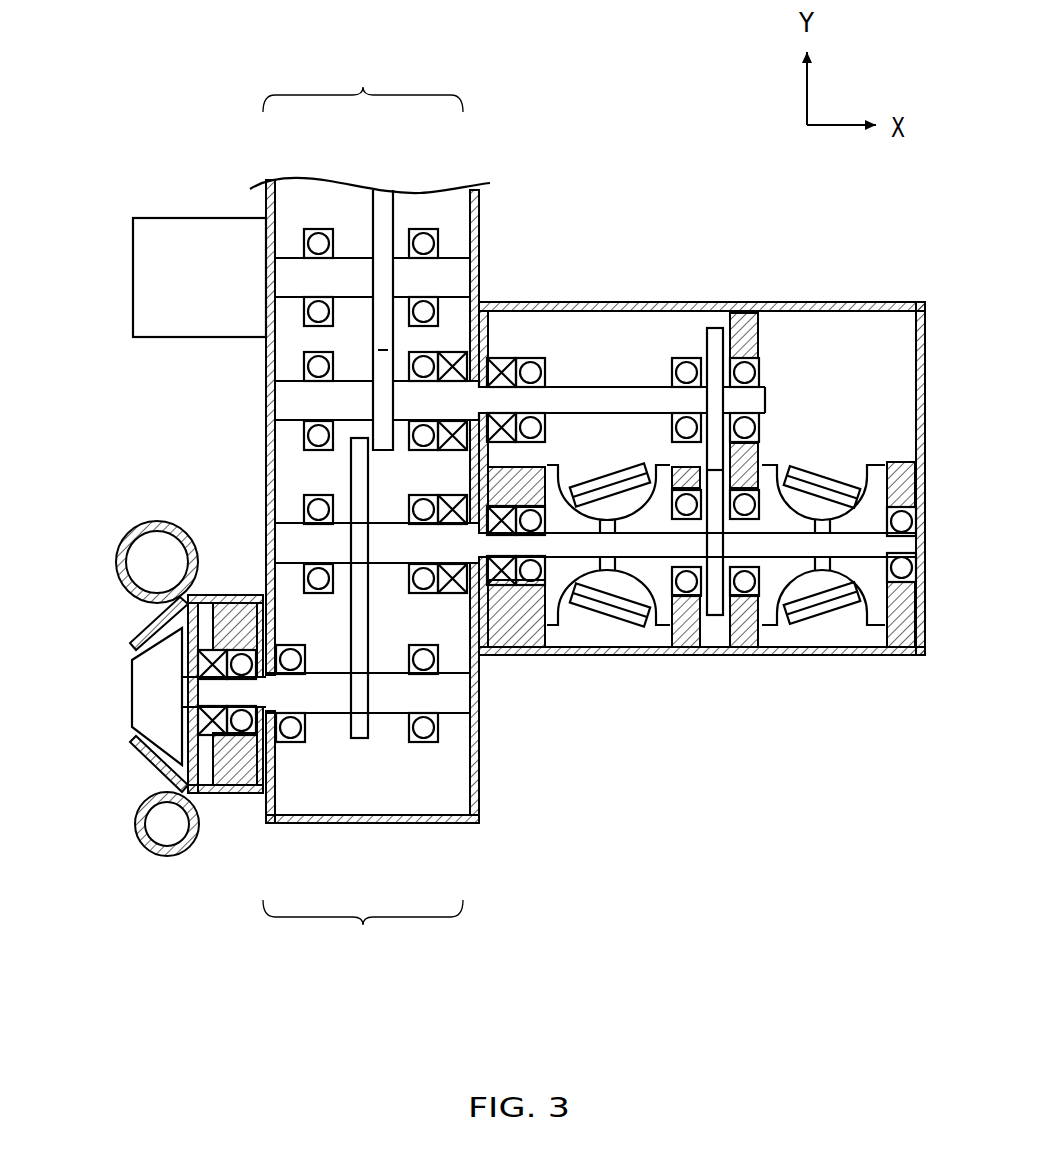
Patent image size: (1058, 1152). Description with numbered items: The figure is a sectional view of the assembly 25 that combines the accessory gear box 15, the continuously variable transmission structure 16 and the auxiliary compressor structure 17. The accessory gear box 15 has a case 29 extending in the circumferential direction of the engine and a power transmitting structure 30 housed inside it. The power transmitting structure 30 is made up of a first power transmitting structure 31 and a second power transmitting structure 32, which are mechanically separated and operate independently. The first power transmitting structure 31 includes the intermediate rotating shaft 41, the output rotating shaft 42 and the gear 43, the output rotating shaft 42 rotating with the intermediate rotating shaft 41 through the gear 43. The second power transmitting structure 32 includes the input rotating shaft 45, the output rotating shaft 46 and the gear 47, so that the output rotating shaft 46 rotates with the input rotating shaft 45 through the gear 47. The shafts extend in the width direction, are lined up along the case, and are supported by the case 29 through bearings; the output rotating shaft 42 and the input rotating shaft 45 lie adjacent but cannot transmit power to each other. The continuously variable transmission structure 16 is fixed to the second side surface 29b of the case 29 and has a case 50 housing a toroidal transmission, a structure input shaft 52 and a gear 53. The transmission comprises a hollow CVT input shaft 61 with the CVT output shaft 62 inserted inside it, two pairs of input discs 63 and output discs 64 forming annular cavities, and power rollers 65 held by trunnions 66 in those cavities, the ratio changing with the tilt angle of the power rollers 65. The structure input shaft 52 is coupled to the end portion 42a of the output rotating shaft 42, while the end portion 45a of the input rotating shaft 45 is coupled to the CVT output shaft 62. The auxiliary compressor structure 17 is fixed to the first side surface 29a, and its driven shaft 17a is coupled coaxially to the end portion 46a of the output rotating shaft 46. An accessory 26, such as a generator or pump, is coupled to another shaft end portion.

The accessory gear box 15 is at (481, 229).
The continuously variable transmission structure 16 is at (902, 300).
The auxiliary compressor structure 17 is at (140, 768).
The driven shaft 17a is at (235, 693).
The assembly 25 is at (674, 143).
The accessory 26 is at (140, 263).
The case 29 is at (264, 201).
The first side surface 29a is at (266, 443).
The second side surface 29b is at (478, 778).
The power transmitting structure 30 is at (448, 783).
The first power transmitting structure 31 is at (363, 80).
The second power transmitting structure 32 is at (363, 934).
The intermediate rotating shaft 41 is at (360, 267).
The output rotating shaft 42 is at (291, 395).
The end portion 42a is at (456, 393).
The gear 43 is at (385, 322).
The input rotating shaft 45 is at (312, 547).
The end portion 45a is at (446, 550).
The output rotating shaft 46 is at (385, 703).
The end portion 46a is at (285, 698).
The gear 47 is at (360, 738).
The case 50 is at (803, 302).
The structure input shaft 52 is at (560, 397).
The gear 53 is at (715, 328).
The CVT input shaft 61 is at (700, 655).
The CVT output shaft 62 is at (587, 655).
The input disc 63 is at (655, 655).
The output disc 64 is at (558, 657).
The power roller 65 is at (630, 490).
The trunnion 66 is at (590, 475).